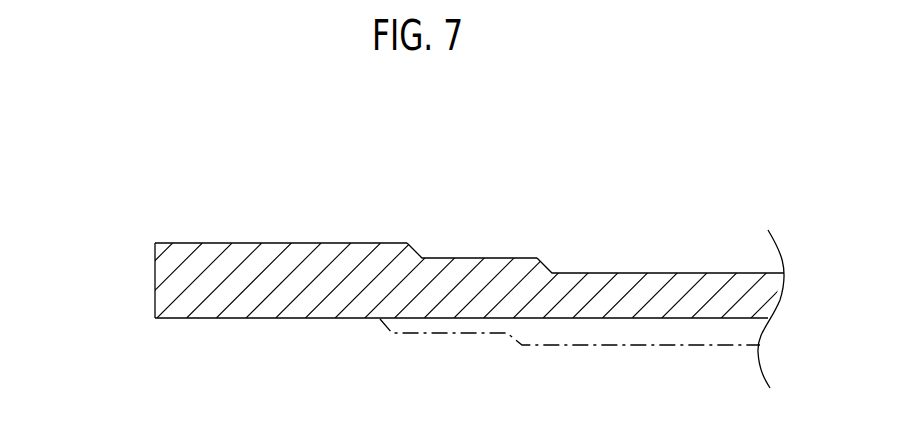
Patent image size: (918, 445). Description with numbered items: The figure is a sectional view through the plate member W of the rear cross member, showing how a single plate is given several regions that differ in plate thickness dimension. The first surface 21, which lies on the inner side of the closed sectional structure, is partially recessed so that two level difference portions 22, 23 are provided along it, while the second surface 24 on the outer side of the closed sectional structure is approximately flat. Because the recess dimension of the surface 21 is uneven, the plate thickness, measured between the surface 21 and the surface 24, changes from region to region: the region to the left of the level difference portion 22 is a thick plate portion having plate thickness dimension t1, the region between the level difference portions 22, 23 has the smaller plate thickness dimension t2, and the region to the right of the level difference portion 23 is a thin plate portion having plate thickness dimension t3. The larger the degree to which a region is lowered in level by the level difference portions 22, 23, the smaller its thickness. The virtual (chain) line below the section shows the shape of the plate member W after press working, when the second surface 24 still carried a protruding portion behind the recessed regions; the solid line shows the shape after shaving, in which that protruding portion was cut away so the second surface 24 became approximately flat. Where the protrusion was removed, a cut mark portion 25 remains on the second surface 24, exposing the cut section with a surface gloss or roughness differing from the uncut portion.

The plate member W is at (153, 275).
The first surface of plate member 21 is at (236, 243).
The level difference portion 22 is at (408, 242).
The level difference portion 23 is at (537, 257).
The second surface of plate member 24 is at (257, 319).
The cut mark portion 25 is at (588, 319).
The plate thickness dimension t1 is at (305, 368).
The plate thickness dimension t2 is at (466, 367).
The plate thickness dimension t3 is at (655, 367).